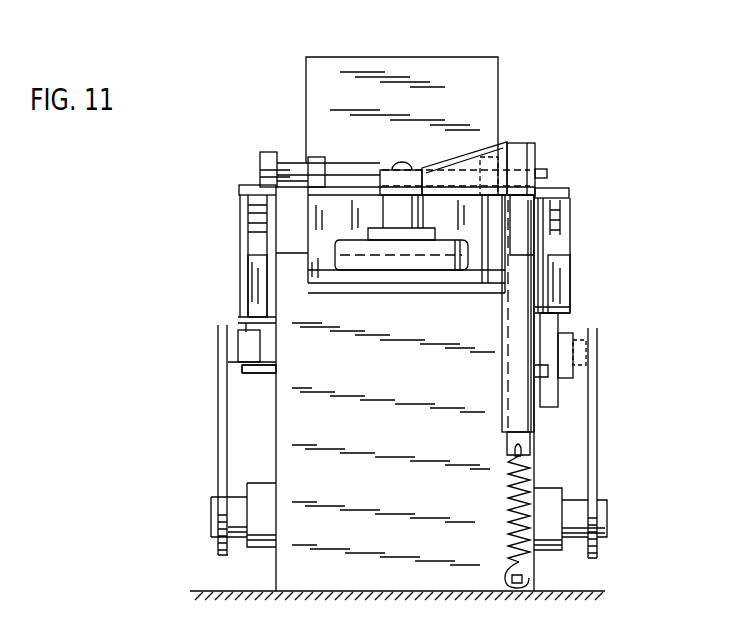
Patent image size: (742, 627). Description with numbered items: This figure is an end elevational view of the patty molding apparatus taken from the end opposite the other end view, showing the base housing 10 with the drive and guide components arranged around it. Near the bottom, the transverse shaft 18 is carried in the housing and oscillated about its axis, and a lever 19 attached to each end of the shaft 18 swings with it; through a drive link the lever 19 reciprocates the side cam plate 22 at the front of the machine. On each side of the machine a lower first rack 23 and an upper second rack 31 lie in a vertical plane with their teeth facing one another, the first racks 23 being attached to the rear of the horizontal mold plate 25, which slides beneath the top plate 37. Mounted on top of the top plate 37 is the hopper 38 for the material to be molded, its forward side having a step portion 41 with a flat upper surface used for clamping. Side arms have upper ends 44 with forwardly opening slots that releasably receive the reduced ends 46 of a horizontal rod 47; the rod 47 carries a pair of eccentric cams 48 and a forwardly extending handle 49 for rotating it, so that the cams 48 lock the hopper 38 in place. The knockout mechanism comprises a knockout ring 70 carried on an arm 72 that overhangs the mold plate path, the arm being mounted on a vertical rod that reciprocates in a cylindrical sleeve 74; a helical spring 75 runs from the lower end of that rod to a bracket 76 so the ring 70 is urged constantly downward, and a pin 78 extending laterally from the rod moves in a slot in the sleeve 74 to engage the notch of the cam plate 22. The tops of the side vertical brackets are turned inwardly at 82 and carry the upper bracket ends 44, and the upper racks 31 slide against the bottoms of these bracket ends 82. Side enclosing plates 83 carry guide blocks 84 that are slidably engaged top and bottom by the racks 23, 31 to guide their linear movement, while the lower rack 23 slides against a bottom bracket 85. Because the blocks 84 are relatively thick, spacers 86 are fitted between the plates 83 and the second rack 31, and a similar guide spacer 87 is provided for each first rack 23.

The base housing 10 is at (402, 440).
The transverse shaft 18 is at (242, 500).
The lever 19 is at (212, 400).
The side cam plate 22 is at (570, 348).
The first horizontal rack 23 is at (258, 340).
The mold plate 25 is at (388, 290).
The second rack 31 is at (258, 238).
The top plate 37 is at (478, 264).
The hopper 38 is at (447, 70).
The forward step portion 41 is at (347, 224).
The upper end of arm 44 is at (265, 152).
The reduced end of rod 46 is at (260, 172).
The horizontal rod 47 is at (290, 165).
The cam 48 is at (316, 160).
The handle 49 is at (401, 168).
The knockout ring 70 is at (365, 258).
The arm 72 is at (450, 170).
The cylindrical sleeve 74 is at (510, 330).
The helical spring 75 is at (516, 516).
The bracket 76 is at (514, 577).
The pin 78 is at (560, 322).
The inwardly turned bracket top 82 is at (248, 190).
The side enclosing plate 83 is at (242, 272).
The side guide block 84 is at (252, 292).
The bottom bracket 85 is at (248, 373).
The spacer 86 is at (252, 214).
The guide spacer 87 is at (250, 317).